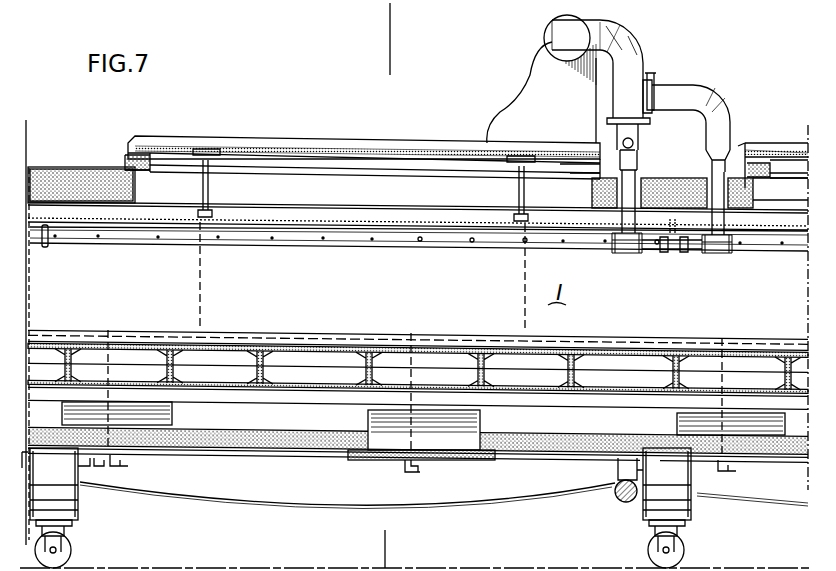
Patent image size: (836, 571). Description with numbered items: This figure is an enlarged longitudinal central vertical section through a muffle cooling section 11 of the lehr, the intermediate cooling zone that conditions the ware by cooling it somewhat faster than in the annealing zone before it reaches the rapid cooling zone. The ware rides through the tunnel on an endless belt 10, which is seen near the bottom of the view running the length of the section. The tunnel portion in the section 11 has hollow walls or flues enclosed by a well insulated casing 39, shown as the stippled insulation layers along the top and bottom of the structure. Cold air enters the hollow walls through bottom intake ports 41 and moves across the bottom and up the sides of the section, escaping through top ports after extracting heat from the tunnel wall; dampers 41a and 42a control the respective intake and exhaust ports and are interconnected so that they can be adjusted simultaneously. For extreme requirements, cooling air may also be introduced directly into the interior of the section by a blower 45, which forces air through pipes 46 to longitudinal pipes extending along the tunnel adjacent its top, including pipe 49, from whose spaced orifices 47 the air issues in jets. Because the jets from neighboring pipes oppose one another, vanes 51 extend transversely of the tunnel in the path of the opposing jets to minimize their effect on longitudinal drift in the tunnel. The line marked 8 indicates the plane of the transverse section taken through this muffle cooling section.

The section line 8- 8 is at (373, 11).
The endless belt 10 is at (278, 507).
The muffle cooling section 11 is at (66, 165).
The insulated casing 39 is at (43, 167).
The bottom intake port 41 is at (170, 417).
The damper 41a is at (380, 460).
The damper 42a is at (142, 164).
The blower 45 is at (545, 59).
The pipe 46 is at (672, 92).
The spaced orifice 47 is at (368, 244).
The pipe 49 is at (436, 244).
The vane 51 is at (46, 246).